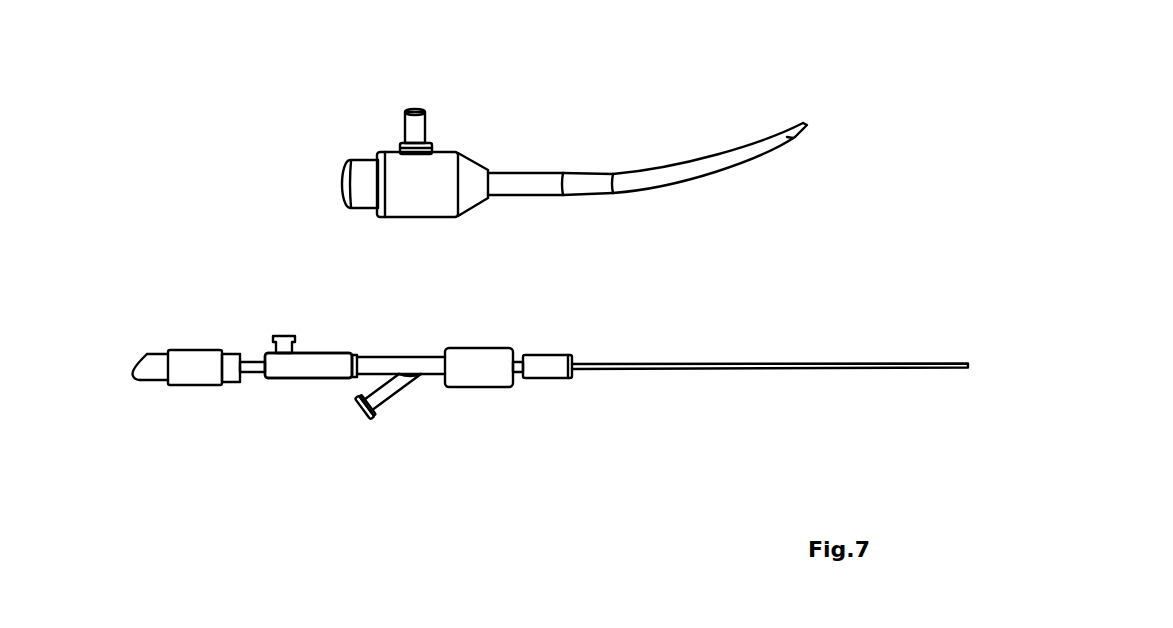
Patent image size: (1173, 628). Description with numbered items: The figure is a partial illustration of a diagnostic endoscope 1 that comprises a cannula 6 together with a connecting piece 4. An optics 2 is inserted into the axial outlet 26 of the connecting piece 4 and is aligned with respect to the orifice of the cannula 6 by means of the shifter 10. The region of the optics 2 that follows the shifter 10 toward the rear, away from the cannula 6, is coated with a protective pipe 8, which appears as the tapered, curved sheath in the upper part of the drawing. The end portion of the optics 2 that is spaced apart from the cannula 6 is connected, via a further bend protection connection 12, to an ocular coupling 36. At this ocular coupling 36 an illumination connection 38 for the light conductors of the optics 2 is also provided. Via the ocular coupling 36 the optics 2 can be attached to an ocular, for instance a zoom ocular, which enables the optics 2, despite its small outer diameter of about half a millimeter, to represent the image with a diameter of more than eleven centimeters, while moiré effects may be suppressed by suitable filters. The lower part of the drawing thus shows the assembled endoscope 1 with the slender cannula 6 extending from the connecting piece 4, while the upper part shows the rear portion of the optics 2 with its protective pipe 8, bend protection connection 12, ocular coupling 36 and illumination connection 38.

The diagnostic endoscope 1 is at (642, 393).
The optics 2 is at (286, 404).
The connecting piece 4 is at (410, 375).
The cannula 6 is at (788, 368).
The protective pipe 8 is at (672, 177).
The shifter 10 is at (317, 355).
The bend protection connection 12 is at (573, 177).
The axial outlet 26 is at (385, 363).
The ocular coupling 36 is at (352, 167).
The illumination connection 38 is at (422, 127).